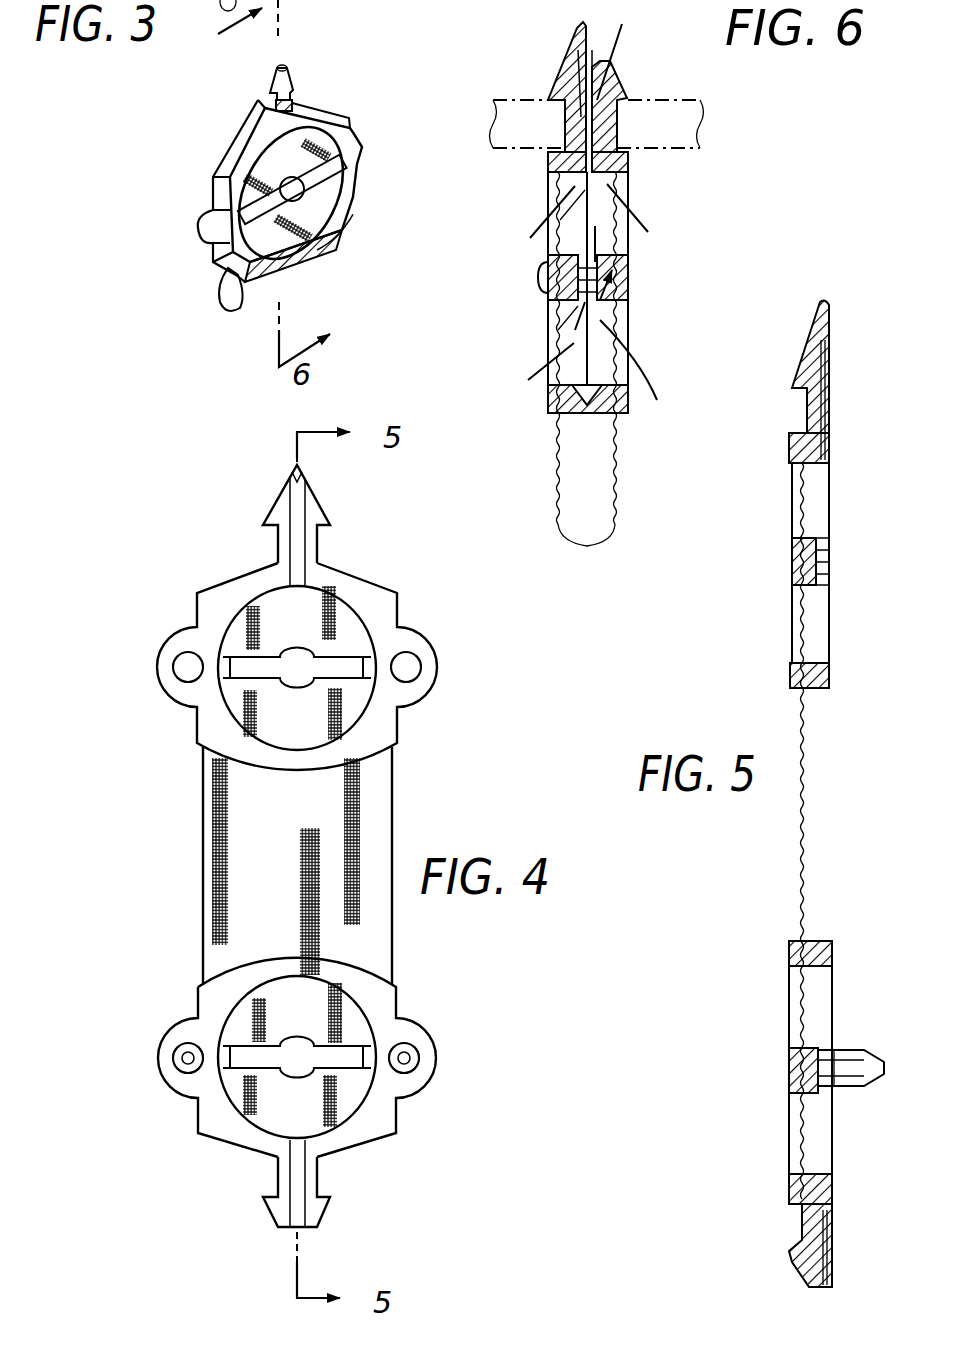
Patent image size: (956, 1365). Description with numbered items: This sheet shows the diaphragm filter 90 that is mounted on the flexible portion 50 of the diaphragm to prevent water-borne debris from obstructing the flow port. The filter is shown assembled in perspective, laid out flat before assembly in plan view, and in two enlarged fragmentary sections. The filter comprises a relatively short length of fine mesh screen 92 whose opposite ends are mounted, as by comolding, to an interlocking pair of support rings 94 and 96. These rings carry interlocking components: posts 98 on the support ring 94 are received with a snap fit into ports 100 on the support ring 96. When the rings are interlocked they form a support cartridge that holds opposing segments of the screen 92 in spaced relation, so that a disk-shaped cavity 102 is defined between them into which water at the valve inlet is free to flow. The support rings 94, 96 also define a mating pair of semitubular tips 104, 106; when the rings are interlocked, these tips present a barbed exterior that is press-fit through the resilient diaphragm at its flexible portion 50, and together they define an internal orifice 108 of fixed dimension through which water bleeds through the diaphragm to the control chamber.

In FIG. 6, the flexible portion 50 is at (668, 152).
In FIG. 3, the diaphragm filter 90 is at (249, 194).
In FIG. 4, the diaphragm filter 90 is at (293, 844).
In FIG. 3, the fine mesh screen 92 is at (222, 300).
In FIG. 4, the fine mesh screen 92 is at (352, 622).
In FIG. 6, the fine mesh screen 92 is at (556, 322).
In FIG. 5, the fine mesh screen 92 is at (800, 832).
In FIG. 3, the support ring 94 is at (348, 202).
In FIG. 4, the support ring 94 is at (375, 1113).
In FIG. 6, the support ring 94 is at (588, 399).
In FIG. 5, the support ring 94 is at (785, 950).
In FIG. 3, the support ring 96 is at (212, 190).
In FIG. 4, the support ring 96 is at (388, 727).
In FIG. 6, the support ring 96 is at (558, 478).
In FIG. 5, the support ring 96 is at (788, 675).
In FIG. 4, the posts 98 is at (182, 1060).
In FIG. 5, the posts 98 is at (839, 1088).
In FIG. 4, the ports 100 is at (186, 663).
In FIG. 6, the ports 100 is at (583, 277).
In FIG. 5, the ports 100 is at (825, 562).
In FIG. 6, the disk-shaped cavity 102 is at (618, 205).
In FIG. 3, the semitubular tip 104 is at (296, 108).
In FIG. 4, the semitubular tip 104 is at (270, 1180).
In FIG. 6, the semitubular tip 104 is at (625, 126).
In FIG. 5, the semitubular tip 104 is at (817, 1208).
In FIG. 3, the semitubular tip 106 is at (272, 78).
In FIG. 4, the semitubular tip 106 is at (278, 535).
In FIG. 6, the semitubular tip 106 is at (570, 65).
In FIG. 5, the semitubular tip 106 is at (795, 355).
In FIG. 6, the internal orifice 108 is at (625, 92).